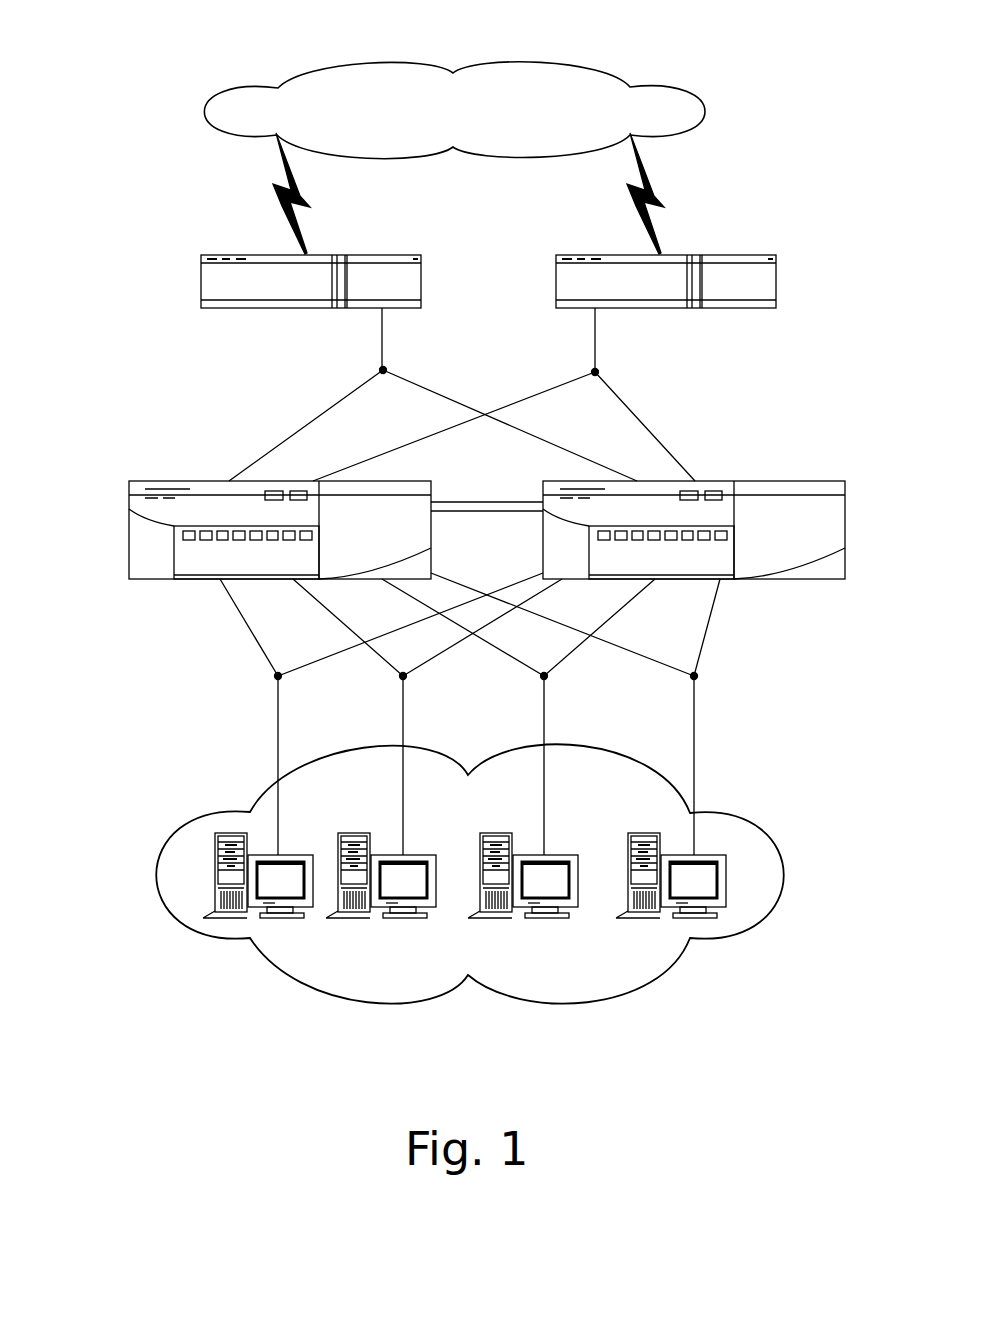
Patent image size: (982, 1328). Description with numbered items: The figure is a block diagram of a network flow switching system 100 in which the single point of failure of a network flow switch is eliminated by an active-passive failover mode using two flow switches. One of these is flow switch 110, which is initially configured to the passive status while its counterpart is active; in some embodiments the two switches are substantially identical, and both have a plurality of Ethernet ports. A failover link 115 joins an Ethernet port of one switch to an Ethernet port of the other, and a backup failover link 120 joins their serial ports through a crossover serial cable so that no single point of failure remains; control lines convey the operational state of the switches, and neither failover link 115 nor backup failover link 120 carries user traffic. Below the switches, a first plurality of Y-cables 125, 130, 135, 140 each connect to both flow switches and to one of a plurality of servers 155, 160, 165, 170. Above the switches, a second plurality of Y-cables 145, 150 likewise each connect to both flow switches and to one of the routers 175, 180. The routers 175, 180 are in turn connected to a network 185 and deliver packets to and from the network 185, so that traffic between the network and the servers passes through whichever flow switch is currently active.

The network flow switching system 100 is at (128, 548).
The network flow switch 110 is at (848, 548).
The failover link 115 is at (472, 501).
The backup failover link 120 is at (499, 514).
The Y-cable 125 is at (277, 703).
The Y-cable 130 is at (402, 703).
The Y-cable 135 is at (543, 703).
The Y-cable 140 is at (711, 622).
The Y-cable 145 is at (310, 419).
The Y-cable 150 is at (646, 424).
The server 155 is at (247, 918).
The server 160 is at (370, 918).
The server 165 is at (493, 918).
The server 170 is at (650, 918).
The router 175 is at (240, 255).
The router 180 is at (740, 255).
The network 185 is at (598, 70).